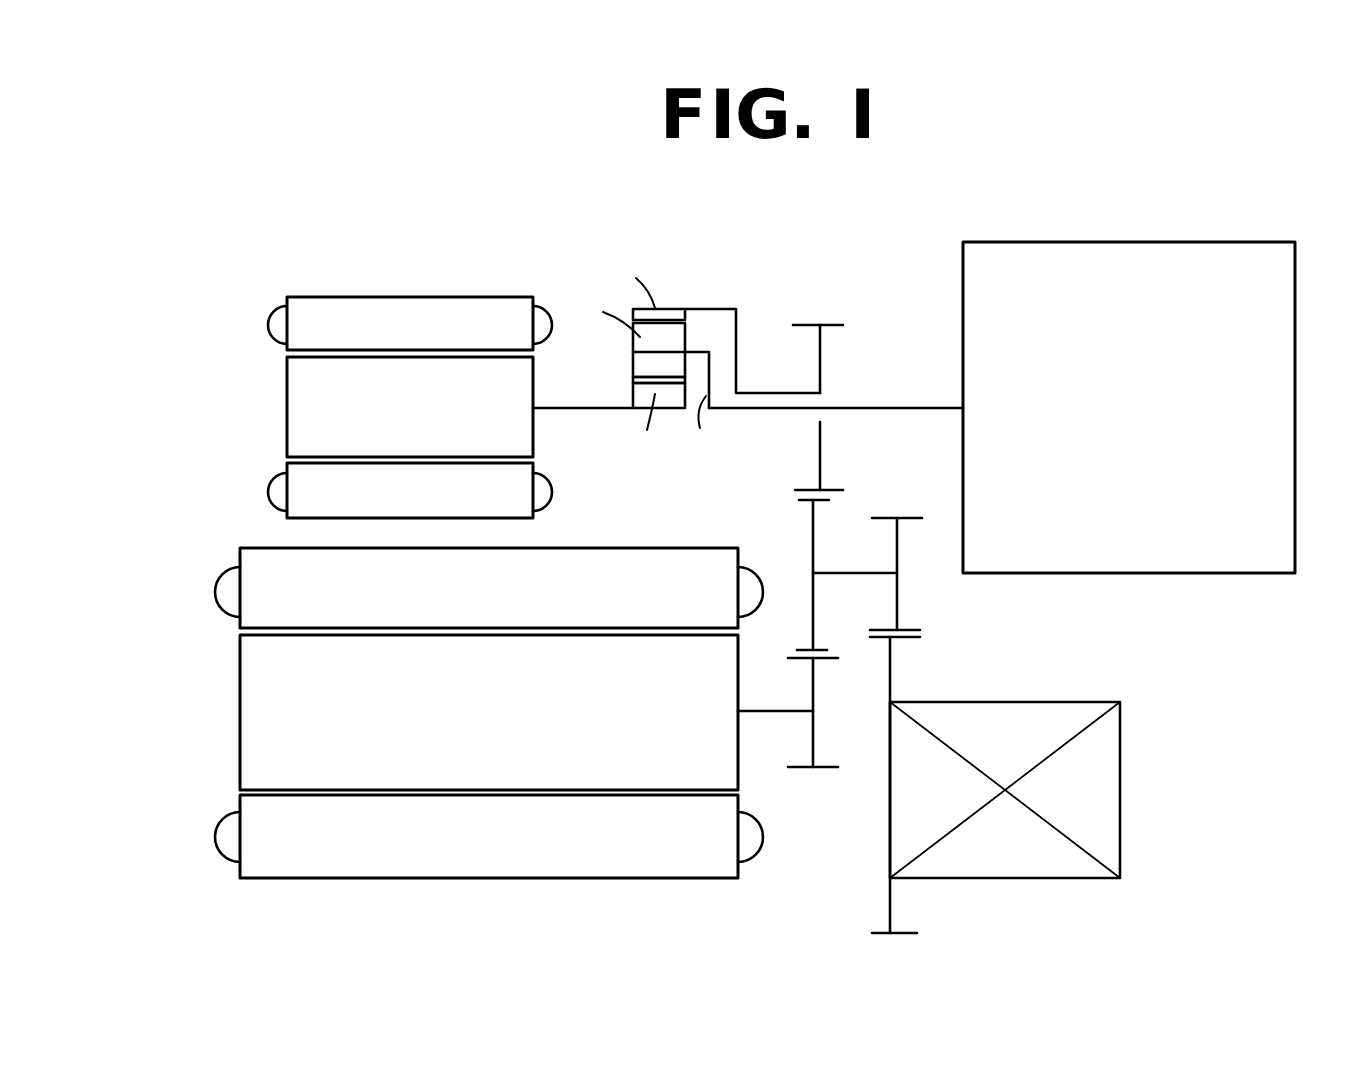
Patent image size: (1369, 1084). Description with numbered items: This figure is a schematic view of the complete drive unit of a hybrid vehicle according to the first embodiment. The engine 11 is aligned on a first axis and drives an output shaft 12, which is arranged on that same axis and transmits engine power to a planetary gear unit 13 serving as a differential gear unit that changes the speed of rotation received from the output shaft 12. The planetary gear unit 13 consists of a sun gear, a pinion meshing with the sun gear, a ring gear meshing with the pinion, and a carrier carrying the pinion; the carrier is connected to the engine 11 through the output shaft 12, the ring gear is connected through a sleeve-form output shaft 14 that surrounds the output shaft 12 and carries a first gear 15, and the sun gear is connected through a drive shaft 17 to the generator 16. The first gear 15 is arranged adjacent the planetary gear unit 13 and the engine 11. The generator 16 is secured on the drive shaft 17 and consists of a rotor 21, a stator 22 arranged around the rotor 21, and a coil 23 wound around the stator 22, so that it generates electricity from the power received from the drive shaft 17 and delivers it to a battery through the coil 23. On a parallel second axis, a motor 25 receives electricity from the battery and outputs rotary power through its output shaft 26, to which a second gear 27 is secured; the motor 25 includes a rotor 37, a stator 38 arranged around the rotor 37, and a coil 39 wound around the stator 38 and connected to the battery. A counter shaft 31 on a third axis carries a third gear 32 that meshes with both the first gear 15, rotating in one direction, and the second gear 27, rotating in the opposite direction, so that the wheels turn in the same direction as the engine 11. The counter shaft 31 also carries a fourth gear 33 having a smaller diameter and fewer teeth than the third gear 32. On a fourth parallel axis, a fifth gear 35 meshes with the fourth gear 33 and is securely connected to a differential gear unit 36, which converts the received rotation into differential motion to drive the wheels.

The engine 11 is at (1106, 240).
The output shaft 12 is at (900, 406).
The planetary gear unit 13 is at (692, 300).
The output shaft 14 is at (772, 392).
The first gear 15 is at (832, 322).
The generator 16 is at (373, 369).
The drive shaft 17 is at (575, 410).
The rotor 21 is at (287, 410).
The stator 22 is at (316, 298).
The coil 23 is at (268, 325).
The motor 25 is at (460, 723).
The output shaft 26 is at (767, 714).
The second gear 27 is at (830, 770).
The counter shaft 31 is at (858, 572).
The third gear 32 is at (798, 502).
The fourth gear 33 is at (905, 517).
The fifth gear 35 is at (918, 636).
The differential gear unit 36 is at (1065, 702).
The rotor 37 is at (248, 716).
The stator 38 is at (250, 548).
The coil 39 is at (222, 584).